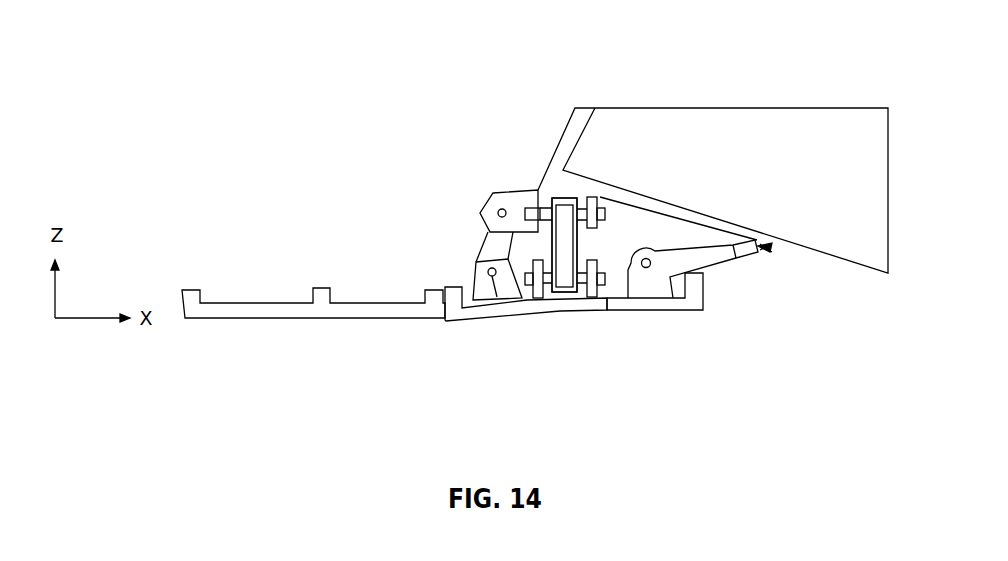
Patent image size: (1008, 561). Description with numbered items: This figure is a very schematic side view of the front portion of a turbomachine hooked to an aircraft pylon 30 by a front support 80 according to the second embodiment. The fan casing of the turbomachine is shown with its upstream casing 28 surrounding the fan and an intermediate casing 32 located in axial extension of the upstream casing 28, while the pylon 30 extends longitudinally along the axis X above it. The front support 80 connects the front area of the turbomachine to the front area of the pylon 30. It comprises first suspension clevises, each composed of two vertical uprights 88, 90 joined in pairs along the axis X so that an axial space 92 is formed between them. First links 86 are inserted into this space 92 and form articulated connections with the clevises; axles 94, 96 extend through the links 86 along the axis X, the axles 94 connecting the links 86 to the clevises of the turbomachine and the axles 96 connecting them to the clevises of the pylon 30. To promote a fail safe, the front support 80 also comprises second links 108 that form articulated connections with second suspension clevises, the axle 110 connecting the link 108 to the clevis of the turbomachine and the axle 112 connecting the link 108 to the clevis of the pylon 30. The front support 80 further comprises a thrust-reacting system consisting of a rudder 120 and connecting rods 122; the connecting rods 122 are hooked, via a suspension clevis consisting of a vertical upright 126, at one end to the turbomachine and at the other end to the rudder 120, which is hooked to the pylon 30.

The front support 80 is at (412, 68).
The upstream casing 28 is at (230, 303).
The pylon 30 is at (768, 108).
The intermediate casing 32 is at (483, 320).
The first links 86 is at (568, 253).
The vertical upright 88 is at (590, 278).
The vertical upright 90 is at (540, 200).
The axial space 92 is at (566, 198).
The axles 94 is at (605, 290).
The axles 96 is at (600, 197).
The second links 108 is at (500, 245).
The axle 110 is at (496, 300).
The axle 112 is at (500, 209).
The rudder 120 is at (775, 252).
The connecting rods 122 is at (713, 264).
The vertical upright 126 is at (657, 303).